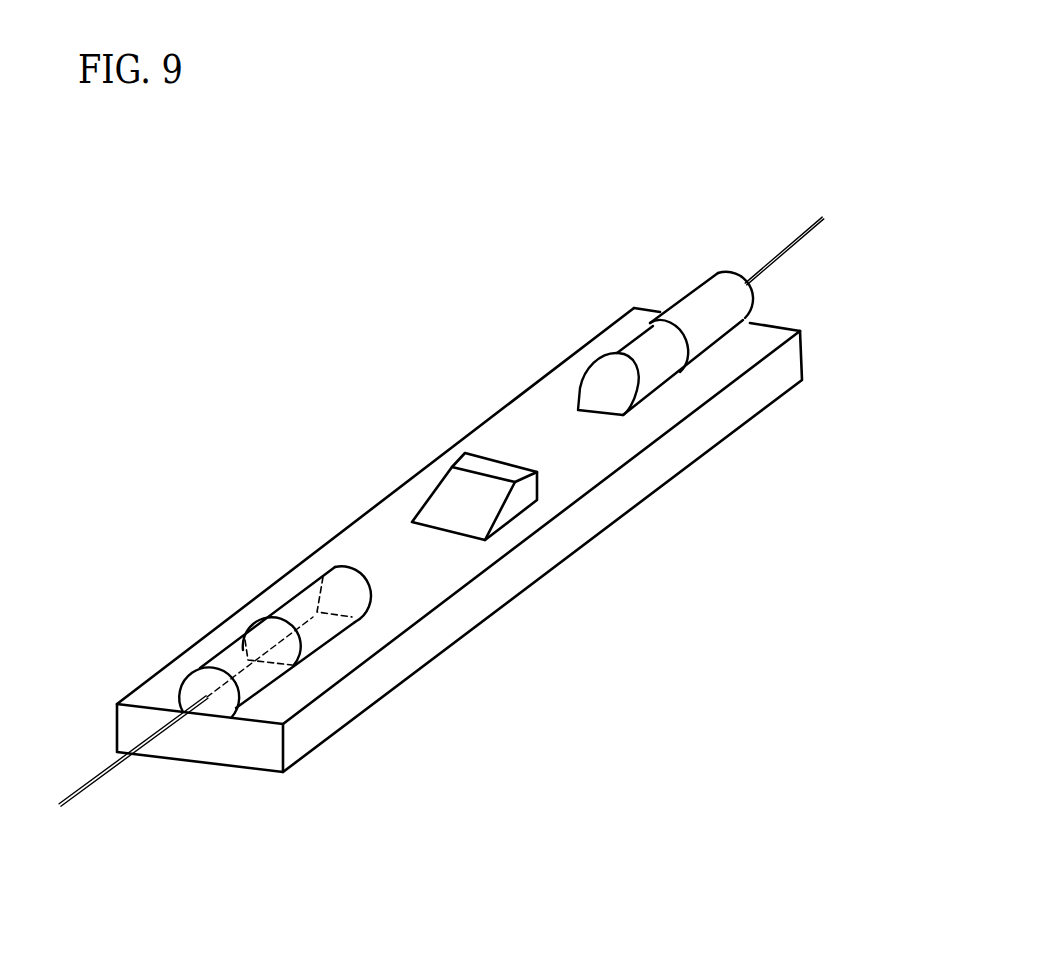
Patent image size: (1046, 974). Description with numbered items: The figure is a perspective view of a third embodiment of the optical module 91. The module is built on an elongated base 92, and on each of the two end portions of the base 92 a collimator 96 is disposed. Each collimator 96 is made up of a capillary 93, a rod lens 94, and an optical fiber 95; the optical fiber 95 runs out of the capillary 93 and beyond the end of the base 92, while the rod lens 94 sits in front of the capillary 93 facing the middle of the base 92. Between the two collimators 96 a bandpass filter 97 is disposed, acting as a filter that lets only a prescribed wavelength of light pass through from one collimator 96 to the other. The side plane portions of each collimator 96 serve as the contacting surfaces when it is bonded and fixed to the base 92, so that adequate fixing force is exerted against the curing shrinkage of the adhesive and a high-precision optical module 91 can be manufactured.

The optical module 91 is at (412, 420).
The base 92 is at (505, 587).
The capillary 93 is at (713, 325).
The rod lens 94 is at (648, 382).
The optical fiber 95 is at (780, 262).
The collimator 96 is at (940, 322).
The bandpass filter 97 is at (518, 500).